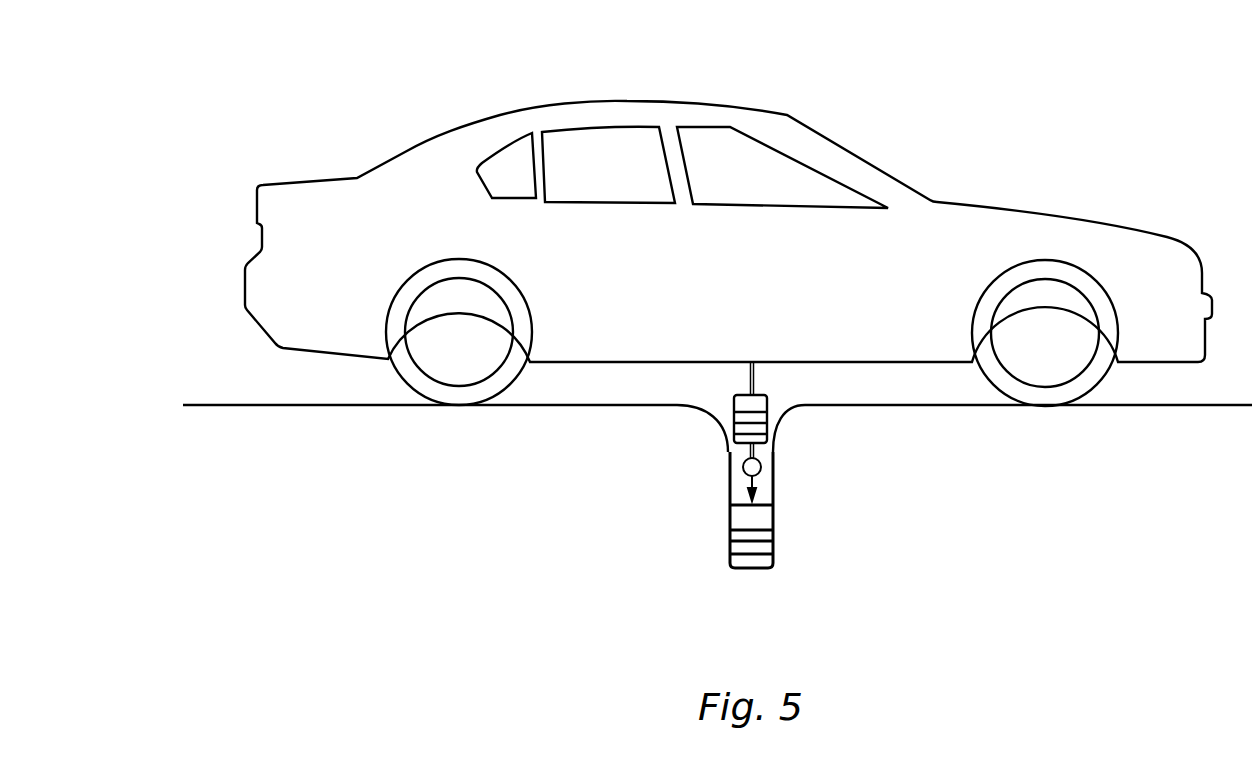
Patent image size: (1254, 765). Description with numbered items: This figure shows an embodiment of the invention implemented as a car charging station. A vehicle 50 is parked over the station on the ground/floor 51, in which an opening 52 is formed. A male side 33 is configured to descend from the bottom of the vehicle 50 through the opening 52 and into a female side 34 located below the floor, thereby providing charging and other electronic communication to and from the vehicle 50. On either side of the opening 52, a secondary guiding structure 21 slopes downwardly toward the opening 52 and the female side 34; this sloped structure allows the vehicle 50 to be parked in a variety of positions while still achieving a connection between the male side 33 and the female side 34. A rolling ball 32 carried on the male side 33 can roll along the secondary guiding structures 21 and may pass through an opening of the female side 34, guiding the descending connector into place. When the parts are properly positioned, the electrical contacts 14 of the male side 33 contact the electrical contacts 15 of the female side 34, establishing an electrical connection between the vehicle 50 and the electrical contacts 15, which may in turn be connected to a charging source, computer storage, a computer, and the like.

The vehicle 50 is at (473, 123).
The ground/floor 51 is at (302, 407).
The opening 52 is at (728, 407).
The secondary guiding structure 21 is at (707, 416).
The electrical contacts of the male side 14 is at (767, 413).
The male side 33 is at (735, 446).
The rolling ball 32 is at (742, 470).
The female side 34 is at (771, 513).
The electrical contacts of the female side 15 is at (738, 558).